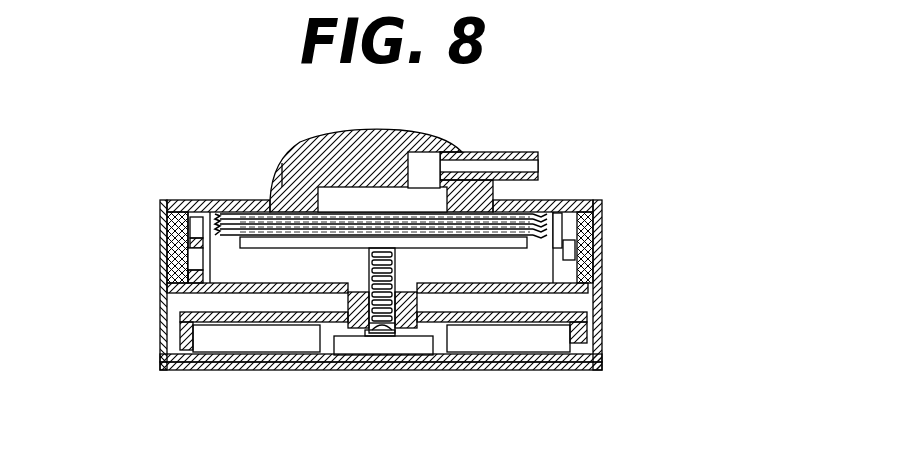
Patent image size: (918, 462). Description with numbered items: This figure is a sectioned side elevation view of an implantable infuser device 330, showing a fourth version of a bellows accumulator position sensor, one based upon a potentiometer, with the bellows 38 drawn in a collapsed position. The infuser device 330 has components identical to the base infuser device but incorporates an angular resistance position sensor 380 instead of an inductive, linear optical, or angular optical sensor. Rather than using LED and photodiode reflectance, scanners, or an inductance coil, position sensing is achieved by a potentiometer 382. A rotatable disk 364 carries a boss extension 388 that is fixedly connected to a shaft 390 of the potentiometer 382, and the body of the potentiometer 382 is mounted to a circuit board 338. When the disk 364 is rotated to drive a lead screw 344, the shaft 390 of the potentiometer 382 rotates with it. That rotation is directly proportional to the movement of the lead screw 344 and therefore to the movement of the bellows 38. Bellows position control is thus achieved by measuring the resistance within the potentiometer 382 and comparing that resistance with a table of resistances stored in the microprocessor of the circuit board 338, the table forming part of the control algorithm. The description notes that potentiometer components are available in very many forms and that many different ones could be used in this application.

The infuser device 330 is at (429, 283).
The bellows 38 is at (598, 231).
The lead screw 344 is at (398, 260).
The rotatable disk 364 is at (188, 312).
The circuit board 338 is at (160, 358).
The angular resistance position sensor 380 is at (300, 388).
The potentiometer 382 is at (350, 343).
The boss extension 388 is at (397, 322).
The shaft 390 is at (380, 333).